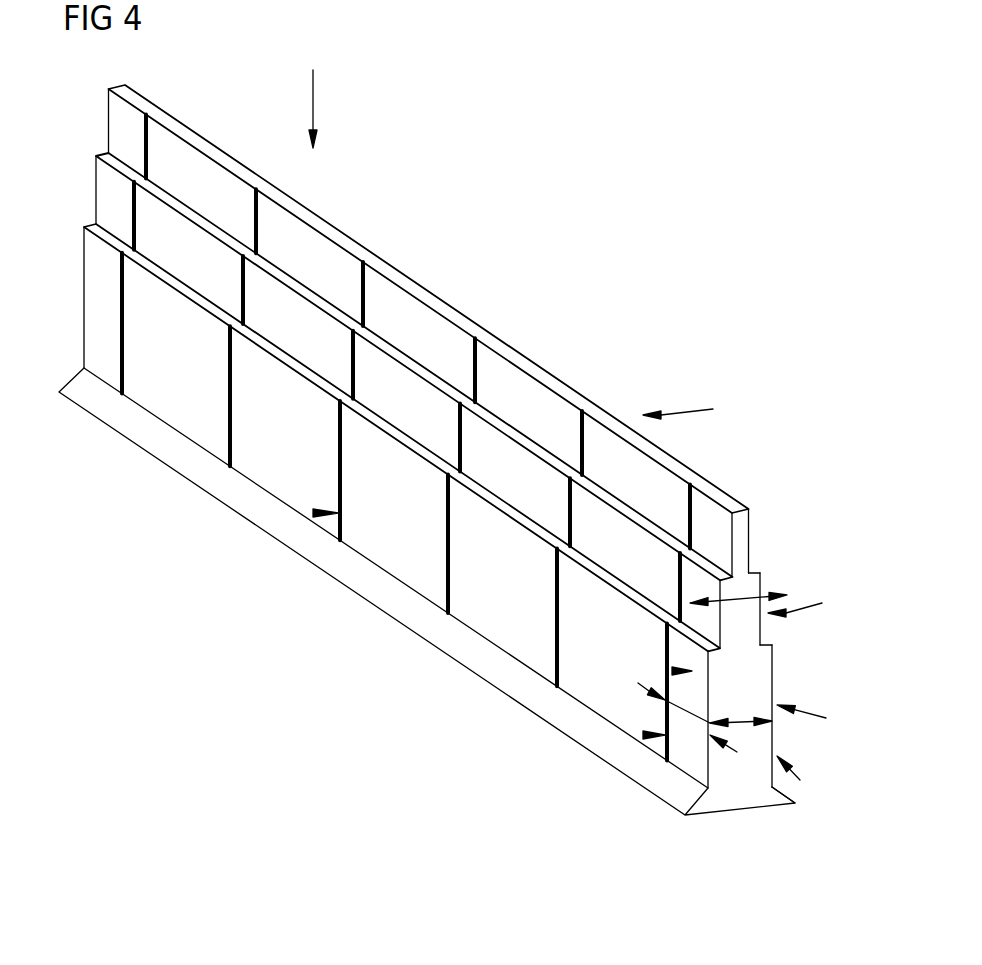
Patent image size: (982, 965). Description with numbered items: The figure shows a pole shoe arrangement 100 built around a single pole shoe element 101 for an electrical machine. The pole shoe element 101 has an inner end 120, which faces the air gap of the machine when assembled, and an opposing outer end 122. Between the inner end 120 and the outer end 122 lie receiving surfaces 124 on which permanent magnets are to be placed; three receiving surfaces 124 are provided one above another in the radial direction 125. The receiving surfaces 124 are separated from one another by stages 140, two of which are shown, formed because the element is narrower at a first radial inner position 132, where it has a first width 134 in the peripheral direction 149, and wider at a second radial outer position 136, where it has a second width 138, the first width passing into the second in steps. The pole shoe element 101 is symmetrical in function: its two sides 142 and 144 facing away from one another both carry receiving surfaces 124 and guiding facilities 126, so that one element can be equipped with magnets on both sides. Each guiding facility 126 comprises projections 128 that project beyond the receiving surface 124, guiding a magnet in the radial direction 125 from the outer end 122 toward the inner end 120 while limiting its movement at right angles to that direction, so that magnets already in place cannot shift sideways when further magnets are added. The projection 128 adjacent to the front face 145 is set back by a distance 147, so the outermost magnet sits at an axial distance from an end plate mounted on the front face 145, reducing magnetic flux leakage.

The pole shoe arrangement 100 is at (630, 265).
The pole shoe element 101 is at (322, 219).
The inner end 120 is at (720, 817).
The outer end 122 is at (740, 505).
The receiving surface 124 is at (452, 432).
The radial direction 125 is at (313, 97).
The guiding facility 126 is at (310, 525).
The projection 128 is at (367, 303).
The first radial inner position 132 is at (822, 719).
The first width 134 is at (740, 717).
The second radial outer position 136 is at (816, 601).
The second width 138 is at (740, 603).
The stage 140 is at (662, 527).
The side 142 is at (667, 663).
The side 144 is at (800, 780).
The front face 145 is at (762, 797).
The distance 147 is at (737, 752).
The peripheral direction 149 is at (690, 407).